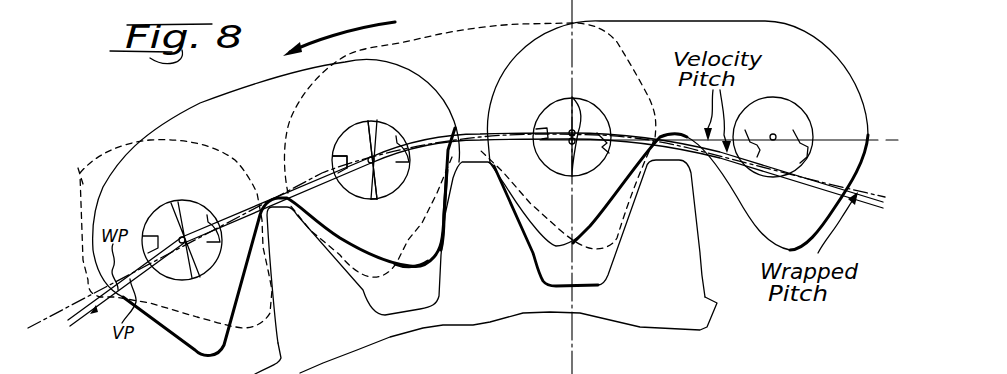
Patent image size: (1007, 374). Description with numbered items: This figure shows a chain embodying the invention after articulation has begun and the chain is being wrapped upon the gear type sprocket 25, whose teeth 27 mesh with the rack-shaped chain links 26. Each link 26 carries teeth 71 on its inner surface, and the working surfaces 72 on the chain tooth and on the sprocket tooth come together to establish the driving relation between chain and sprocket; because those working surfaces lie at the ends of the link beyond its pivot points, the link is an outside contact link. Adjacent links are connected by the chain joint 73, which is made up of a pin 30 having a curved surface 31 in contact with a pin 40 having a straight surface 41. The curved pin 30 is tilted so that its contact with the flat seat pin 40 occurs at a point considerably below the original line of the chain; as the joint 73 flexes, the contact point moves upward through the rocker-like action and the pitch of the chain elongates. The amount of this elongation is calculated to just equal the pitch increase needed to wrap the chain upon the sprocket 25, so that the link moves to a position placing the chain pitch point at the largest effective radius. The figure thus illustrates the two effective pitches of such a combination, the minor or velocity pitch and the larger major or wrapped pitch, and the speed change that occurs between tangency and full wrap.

The sprocket 25 is at (532, 312).
The chain link 26 is at (424, 74).
The sprocket teeth 27 is at (361, 295).
The pin 30 is at (400, 133).
The curved surface 31 is at (373, 125).
The pin 40 is at (350, 137).
The straight surface 41 is at (377, 193).
The teeth 71 is at (420, 262).
The working surfaces 72 is at (447, 207).
The chain joint 73 is at (352, 116).